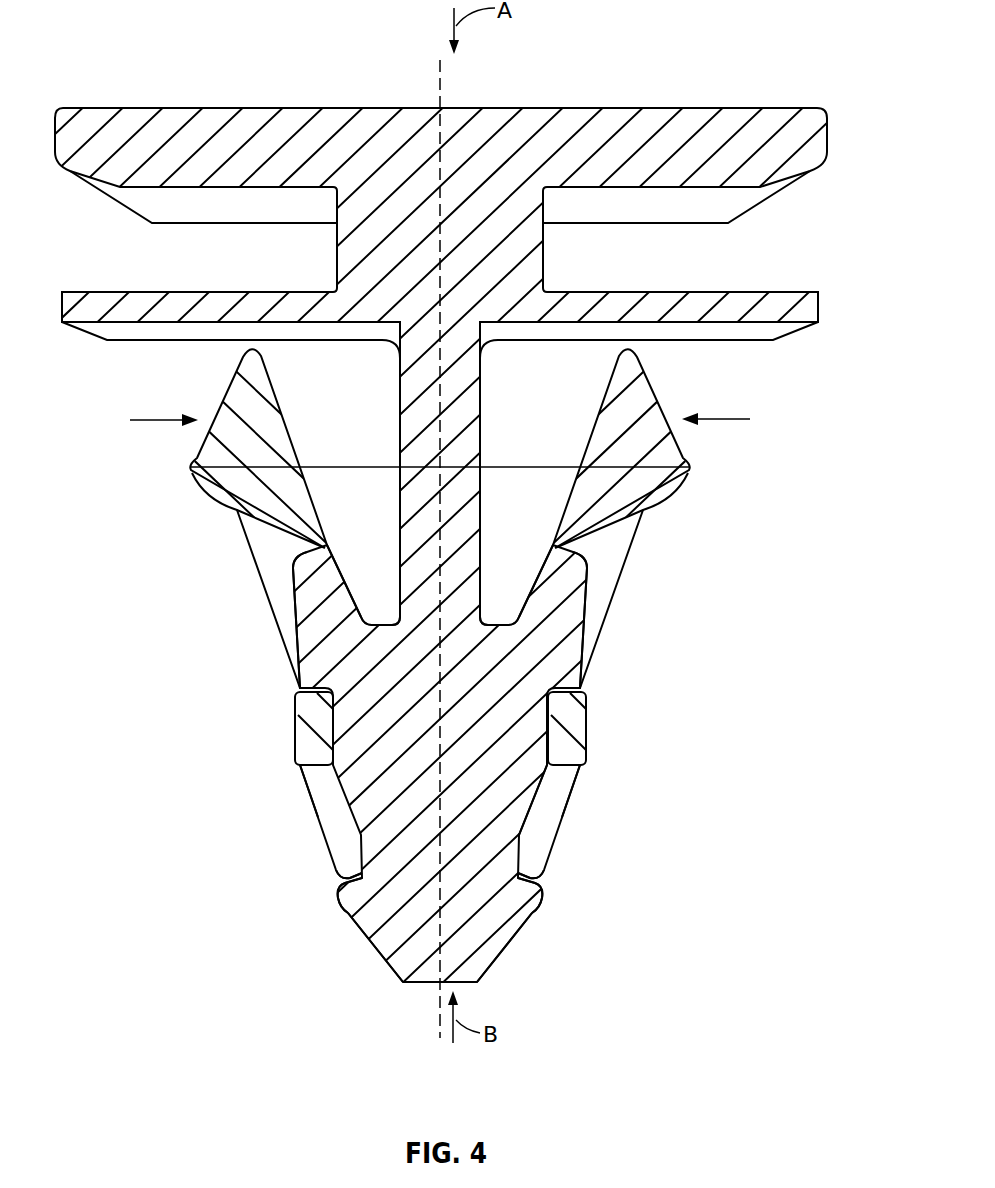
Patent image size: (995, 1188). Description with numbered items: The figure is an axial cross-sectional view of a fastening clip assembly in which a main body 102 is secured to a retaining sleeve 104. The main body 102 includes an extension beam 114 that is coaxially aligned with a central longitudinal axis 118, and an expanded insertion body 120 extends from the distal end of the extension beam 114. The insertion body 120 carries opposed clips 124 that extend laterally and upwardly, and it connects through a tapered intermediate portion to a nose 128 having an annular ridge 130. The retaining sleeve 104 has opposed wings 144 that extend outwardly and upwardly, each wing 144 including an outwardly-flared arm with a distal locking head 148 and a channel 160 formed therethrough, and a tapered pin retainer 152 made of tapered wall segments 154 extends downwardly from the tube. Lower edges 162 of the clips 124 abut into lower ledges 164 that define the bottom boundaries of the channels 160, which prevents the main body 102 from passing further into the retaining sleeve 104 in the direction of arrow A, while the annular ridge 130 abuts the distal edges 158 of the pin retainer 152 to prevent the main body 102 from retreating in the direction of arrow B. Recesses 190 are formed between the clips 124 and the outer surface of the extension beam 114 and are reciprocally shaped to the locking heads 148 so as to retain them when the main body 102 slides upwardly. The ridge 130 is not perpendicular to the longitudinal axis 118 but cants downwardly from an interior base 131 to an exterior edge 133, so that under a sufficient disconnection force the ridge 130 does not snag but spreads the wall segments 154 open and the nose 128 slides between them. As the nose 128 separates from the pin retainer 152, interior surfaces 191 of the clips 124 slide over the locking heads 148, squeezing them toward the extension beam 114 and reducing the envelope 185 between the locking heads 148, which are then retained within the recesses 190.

The main body 102 is at (762, 101).
The retaining sleeve 104 is at (582, 775).
The extension beam 114 is at (486, 447).
The central longitudinal axis 118 is at (442, 78).
The insertion body 120 is at (310, 668).
The clips 124 is at (292, 580).
The nose 128 is at (370, 950).
The annular ridge 130 is at (346, 885).
The interior base 131 is at (352, 918).
The exterior edge 133 is at (337, 900).
The wings 144 is at (197, 480).
The locking head 148 is at (157, 417).
The pin retainer 152 is at (318, 820).
The wall segments 154 is at (312, 795).
The distal edges 158 is at (330, 877).
The channel 160 is at (283, 558).
The edges 162 is at (295, 693).
The lower ledges 164 is at (292, 702).
The envelope 185 is at (337, 465).
The recesses 190 is at (358, 558).
The interior surfaces 191 is at (362, 606).